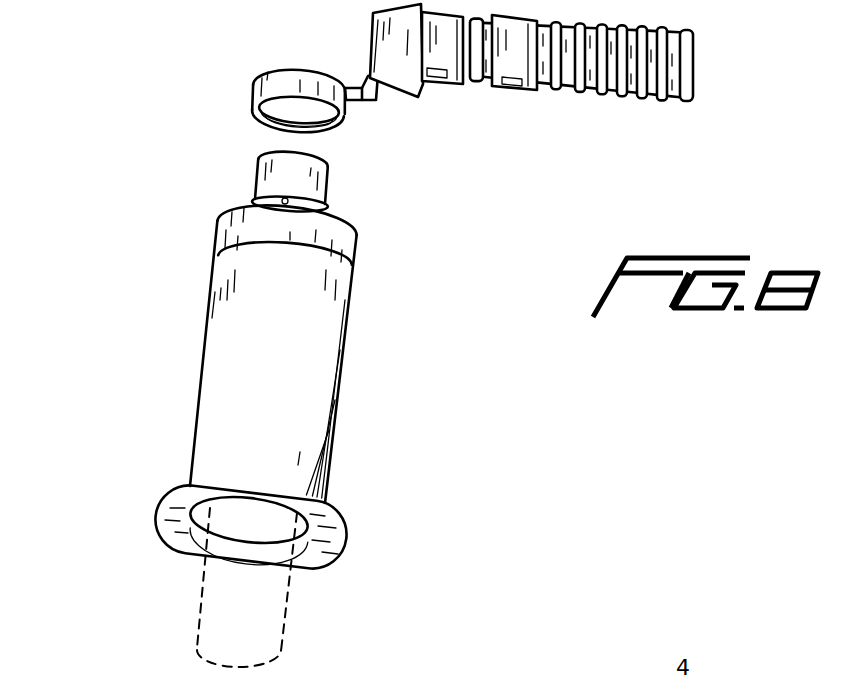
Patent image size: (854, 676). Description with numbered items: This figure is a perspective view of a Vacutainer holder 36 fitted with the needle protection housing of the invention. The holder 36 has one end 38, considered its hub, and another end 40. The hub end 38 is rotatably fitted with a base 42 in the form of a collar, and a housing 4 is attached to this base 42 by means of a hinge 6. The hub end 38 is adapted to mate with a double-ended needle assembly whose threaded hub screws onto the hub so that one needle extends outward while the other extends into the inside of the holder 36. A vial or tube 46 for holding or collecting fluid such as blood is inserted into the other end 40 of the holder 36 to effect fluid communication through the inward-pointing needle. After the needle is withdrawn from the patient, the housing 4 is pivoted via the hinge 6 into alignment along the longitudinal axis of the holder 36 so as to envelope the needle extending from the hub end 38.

The housing 4 is at (602, 93).
The hinge 6 is at (357, 81).
The Vacutainer holder 36 is at (203, 350).
The end 38 is at (330, 184).
The end 40 is at (152, 517).
The base 42 is at (252, 92).
The vial or tube 46 is at (197, 600).